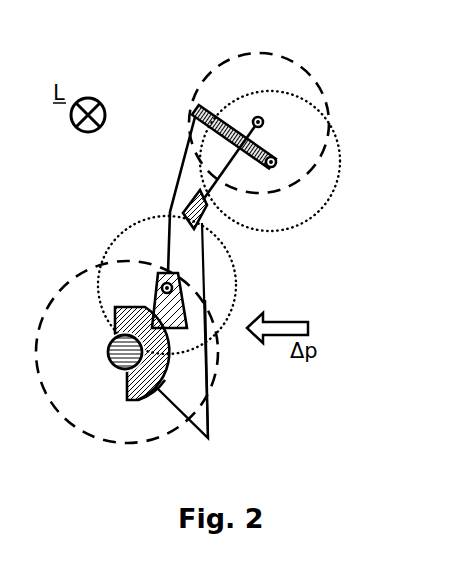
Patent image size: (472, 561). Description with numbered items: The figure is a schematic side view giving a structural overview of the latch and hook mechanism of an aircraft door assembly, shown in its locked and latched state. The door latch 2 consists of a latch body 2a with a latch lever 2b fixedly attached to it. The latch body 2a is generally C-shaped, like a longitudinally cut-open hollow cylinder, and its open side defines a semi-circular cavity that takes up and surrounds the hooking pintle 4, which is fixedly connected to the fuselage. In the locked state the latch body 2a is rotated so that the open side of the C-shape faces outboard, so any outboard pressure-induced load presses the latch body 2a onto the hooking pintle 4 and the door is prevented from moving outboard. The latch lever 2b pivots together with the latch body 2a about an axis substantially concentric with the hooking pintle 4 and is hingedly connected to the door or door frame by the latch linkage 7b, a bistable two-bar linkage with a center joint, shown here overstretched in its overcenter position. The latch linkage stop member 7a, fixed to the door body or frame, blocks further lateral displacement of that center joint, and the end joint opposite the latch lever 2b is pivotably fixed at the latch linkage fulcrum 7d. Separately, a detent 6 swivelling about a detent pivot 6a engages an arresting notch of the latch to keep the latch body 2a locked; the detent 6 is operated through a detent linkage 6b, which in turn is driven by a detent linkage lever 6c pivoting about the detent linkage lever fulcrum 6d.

The door latch 2 is at (148, 402).
The latch body 2a is at (132, 403).
The latch lever 2b is at (210, 421).
The hooking pintle 4 is at (107, 352).
The detent 6 is at (152, 300).
The detent pivot 6a is at (158, 285).
The detent linkage 6b is at (172, 198).
The detent linkage lever 6c is at (208, 110).
The detent linkage lever fulcrum 6d is at (277, 162).
The latch linkage stop member 7a is at (192, 186).
The latch linkage 7b is at (203, 247).
The latch linkage fulcrum 7d is at (263, 121).